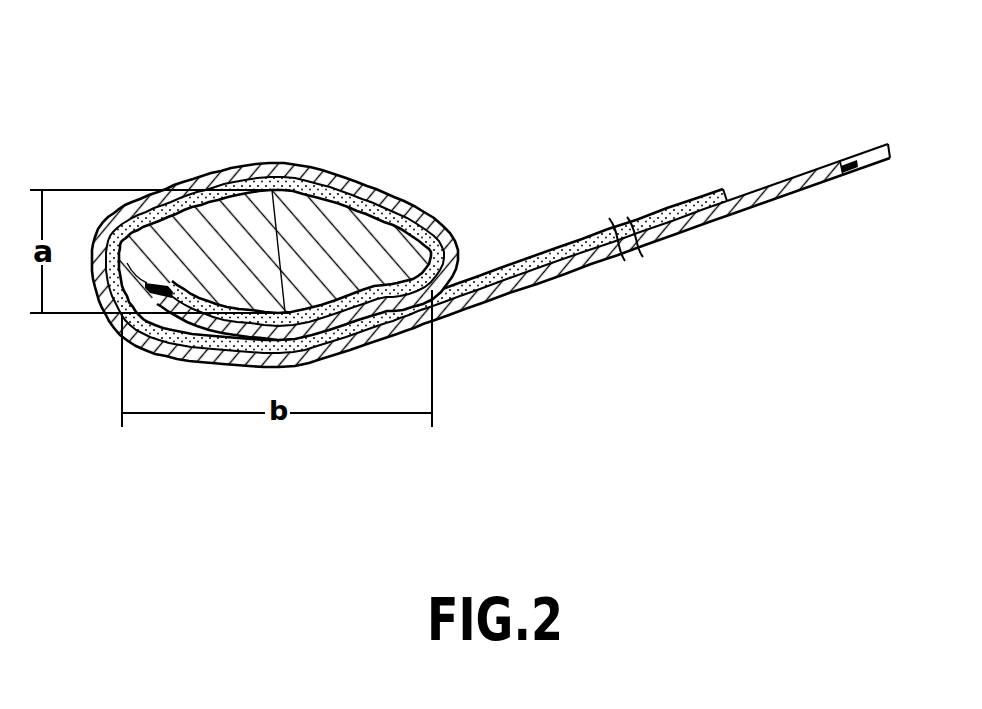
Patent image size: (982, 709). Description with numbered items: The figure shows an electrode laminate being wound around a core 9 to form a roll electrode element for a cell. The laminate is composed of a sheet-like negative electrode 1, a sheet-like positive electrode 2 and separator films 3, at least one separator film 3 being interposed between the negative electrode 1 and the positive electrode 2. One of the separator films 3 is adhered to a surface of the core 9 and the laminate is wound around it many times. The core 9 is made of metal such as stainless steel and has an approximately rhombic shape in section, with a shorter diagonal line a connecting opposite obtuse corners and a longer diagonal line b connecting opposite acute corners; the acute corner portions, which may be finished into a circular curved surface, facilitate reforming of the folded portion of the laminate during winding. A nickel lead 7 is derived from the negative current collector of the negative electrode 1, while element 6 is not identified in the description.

The sheet-like negative electrode 1 is at (772, 188).
The sheet-like positive electrode 2 is at (685, 202).
The separator film 3 is at (880, 147).
The tip end of wound tube 6 is at (145, 326).
The nickel lead 7 is at (853, 174).
The core 9 is at (340, 233).